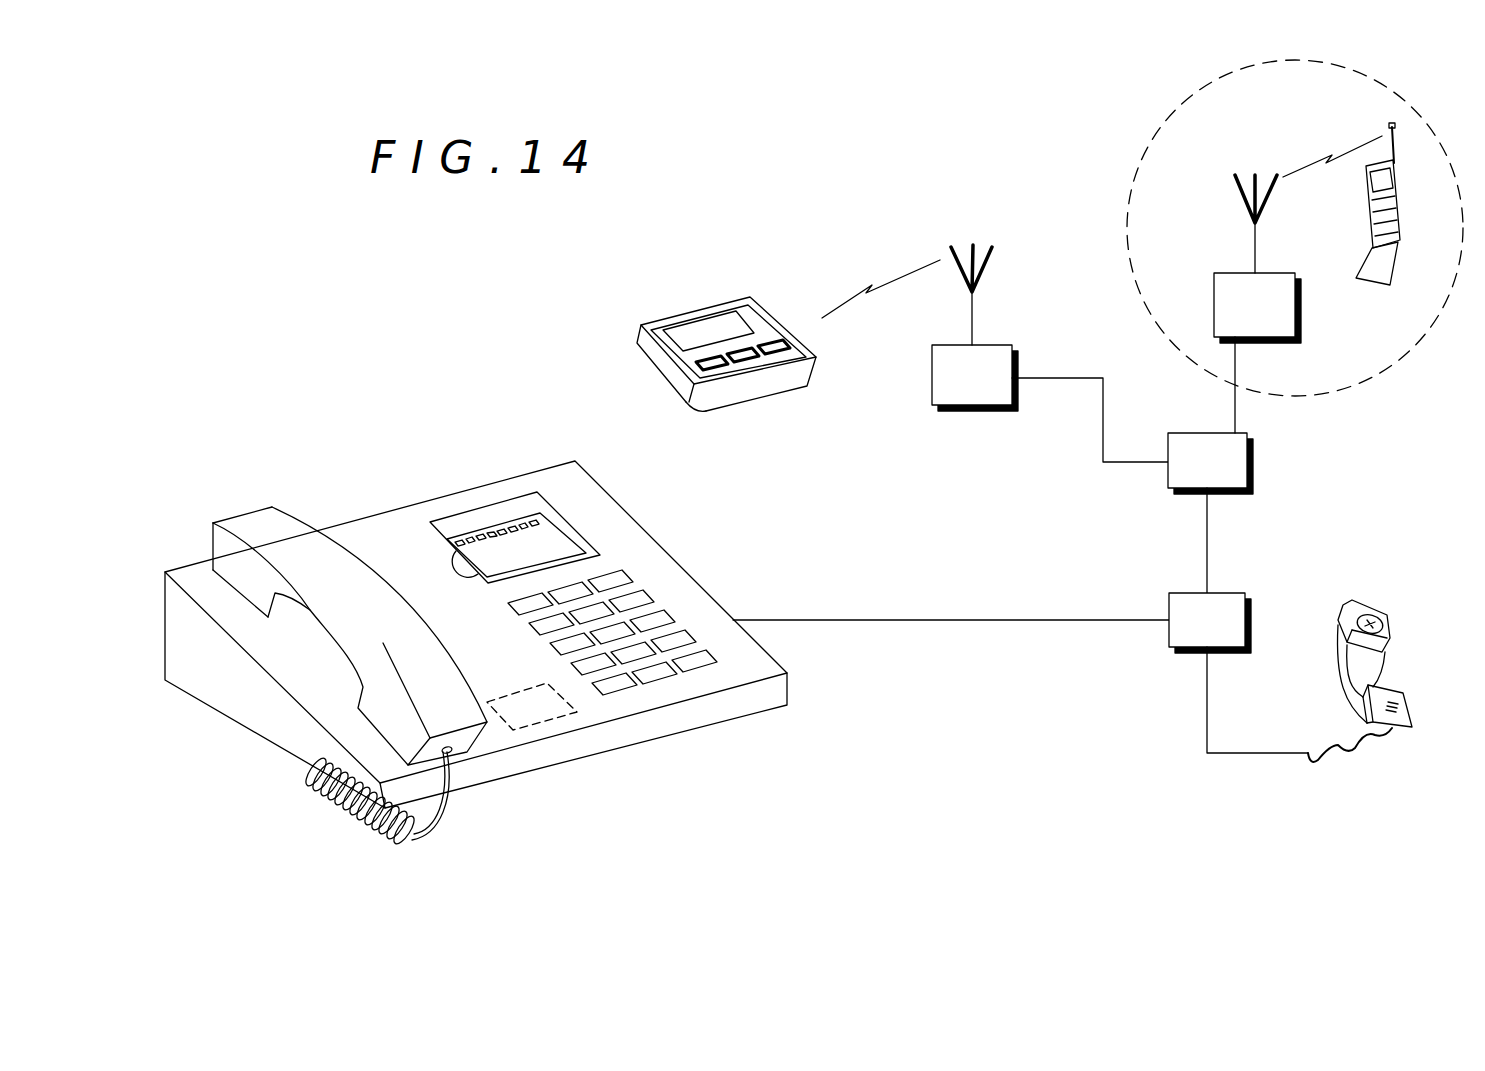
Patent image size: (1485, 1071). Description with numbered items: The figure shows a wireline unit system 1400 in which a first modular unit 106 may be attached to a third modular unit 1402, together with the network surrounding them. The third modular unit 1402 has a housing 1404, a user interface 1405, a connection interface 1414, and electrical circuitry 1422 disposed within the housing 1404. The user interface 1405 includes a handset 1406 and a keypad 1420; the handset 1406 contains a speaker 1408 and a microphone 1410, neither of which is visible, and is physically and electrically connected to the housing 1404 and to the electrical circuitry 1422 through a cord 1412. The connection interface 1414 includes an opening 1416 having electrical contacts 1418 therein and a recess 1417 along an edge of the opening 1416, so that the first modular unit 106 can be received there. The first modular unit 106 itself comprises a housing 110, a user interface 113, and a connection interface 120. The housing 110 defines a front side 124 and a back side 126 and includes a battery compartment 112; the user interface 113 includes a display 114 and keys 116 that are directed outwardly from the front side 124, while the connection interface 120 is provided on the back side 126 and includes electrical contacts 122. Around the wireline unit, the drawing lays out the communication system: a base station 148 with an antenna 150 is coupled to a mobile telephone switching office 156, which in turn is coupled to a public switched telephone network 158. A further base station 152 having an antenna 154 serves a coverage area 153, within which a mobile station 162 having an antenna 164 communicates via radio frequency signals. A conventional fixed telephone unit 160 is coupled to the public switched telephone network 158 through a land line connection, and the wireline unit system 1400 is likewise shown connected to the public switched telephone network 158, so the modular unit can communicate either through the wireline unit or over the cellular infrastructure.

The wireline unit system 1400 is at (440, 334).
The third modular unit 1402 is at (452, 492).
The housing 1404 is at (383, 532).
The user interface 1405 is at (632, 560).
The handset 1406 is at (328, 605).
The speaker 1408 is at (235, 590).
The microphone 1410 is at (383, 740).
The cord 1412 is at (440, 808).
The connection interface 1414 is at (468, 557).
The opening 1416 is at (550, 547).
The recess 1417 is at (463, 575).
The electrical contacts 1418 is at (497, 518).
The keypad 1420 is at (655, 596).
The electrical circuitry 1422 is at (560, 717).
The first modular unit 106 is at (690, 308).
The housing 110 is at (653, 325).
The battery compartment 112 is at (812, 360).
The user interface 113 is at (748, 275).
The display 114 is at (713, 325).
The keys 116 is at (744, 345).
The connection interface 120 is at (650, 365).
The electrical contacts 122 is at (654, 380).
The front side 124 is at (712, 378).
The back side 126 is at (687, 400).
The base station 1 148 is at (948, 345).
The antenna 150 is at (973, 310).
The base station 152 is at (1280, 343).
The coverage area 153 is at (1220, 77).
The antenna 154 is at (1255, 248).
The mobile telephone switching office 156 is at (1253, 458).
The public switched telephone network 158 is at (1233, 592).
The fixed telephone unit 160 is at (1380, 613).
The mobile station 162 is at (1368, 220).
The antenna 164 is at (1387, 127).